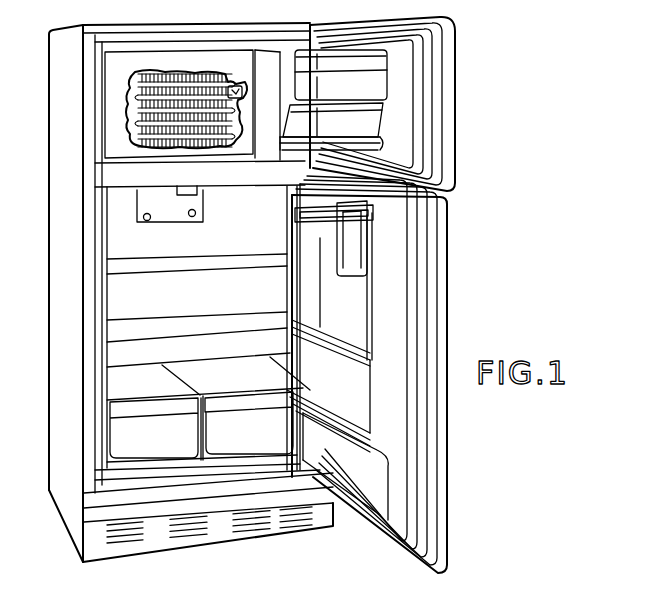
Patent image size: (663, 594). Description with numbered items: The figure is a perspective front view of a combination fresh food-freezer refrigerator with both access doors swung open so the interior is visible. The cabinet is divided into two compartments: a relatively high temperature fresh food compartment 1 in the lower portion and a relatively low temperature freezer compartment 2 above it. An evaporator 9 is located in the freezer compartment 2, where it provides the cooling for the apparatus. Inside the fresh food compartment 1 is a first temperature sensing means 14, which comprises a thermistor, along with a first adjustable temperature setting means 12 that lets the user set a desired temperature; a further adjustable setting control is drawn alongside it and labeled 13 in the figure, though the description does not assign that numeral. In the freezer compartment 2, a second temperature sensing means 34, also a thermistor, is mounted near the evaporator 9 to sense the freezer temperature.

The fresh food compartment 1 is at (118, 375).
The freezer compartment 2 is at (203, 70).
The evaporator 9 is at (182, 77).
The first adjustable temperature setting means 12 is at (190, 216).
The control knob 13 is at (144, 219).
The first temperature sensing means 14 is at (197, 190).
The second temperature sensing means 34 is at (240, 82).